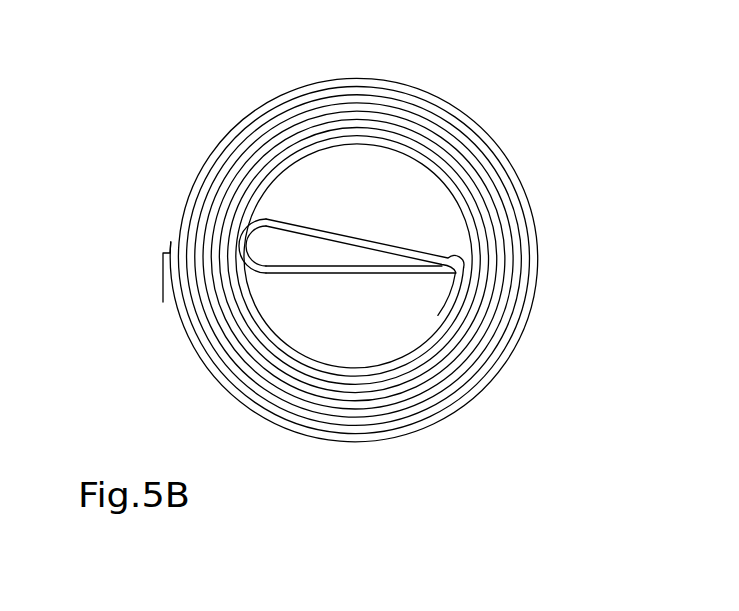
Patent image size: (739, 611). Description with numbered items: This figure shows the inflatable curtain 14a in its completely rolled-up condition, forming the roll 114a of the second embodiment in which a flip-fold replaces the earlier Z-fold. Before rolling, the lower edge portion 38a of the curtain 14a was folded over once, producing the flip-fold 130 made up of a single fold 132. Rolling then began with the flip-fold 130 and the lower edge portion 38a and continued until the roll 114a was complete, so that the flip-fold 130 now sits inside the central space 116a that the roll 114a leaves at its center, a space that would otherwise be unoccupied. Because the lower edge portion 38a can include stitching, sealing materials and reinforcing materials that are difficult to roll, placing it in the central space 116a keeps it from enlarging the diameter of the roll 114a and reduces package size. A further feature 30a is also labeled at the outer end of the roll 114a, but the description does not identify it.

The inflatable curtain 14a is at (165, 143).
The roll 114a is at (258, 90).
The central space 116a is at (367, 220).
The single fold 132 is at (243, 232).
The outer end tab 30a is at (163, 268).
The flip-fold 130 is at (322, 238).
The lower edge portion 38a is at (377, 268).